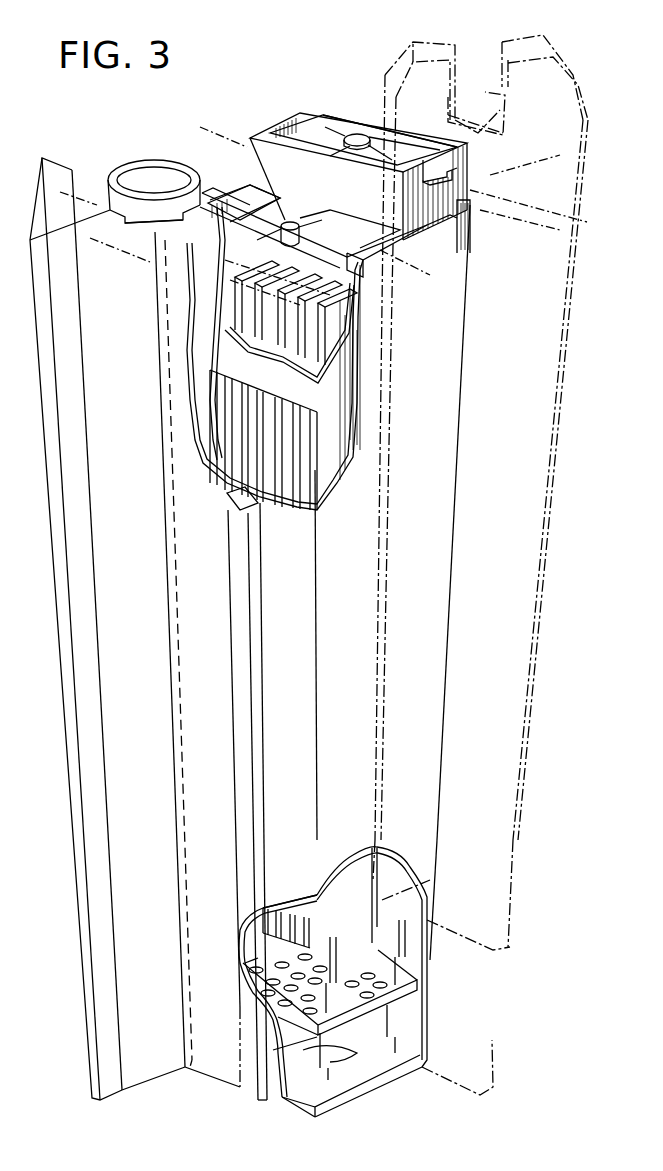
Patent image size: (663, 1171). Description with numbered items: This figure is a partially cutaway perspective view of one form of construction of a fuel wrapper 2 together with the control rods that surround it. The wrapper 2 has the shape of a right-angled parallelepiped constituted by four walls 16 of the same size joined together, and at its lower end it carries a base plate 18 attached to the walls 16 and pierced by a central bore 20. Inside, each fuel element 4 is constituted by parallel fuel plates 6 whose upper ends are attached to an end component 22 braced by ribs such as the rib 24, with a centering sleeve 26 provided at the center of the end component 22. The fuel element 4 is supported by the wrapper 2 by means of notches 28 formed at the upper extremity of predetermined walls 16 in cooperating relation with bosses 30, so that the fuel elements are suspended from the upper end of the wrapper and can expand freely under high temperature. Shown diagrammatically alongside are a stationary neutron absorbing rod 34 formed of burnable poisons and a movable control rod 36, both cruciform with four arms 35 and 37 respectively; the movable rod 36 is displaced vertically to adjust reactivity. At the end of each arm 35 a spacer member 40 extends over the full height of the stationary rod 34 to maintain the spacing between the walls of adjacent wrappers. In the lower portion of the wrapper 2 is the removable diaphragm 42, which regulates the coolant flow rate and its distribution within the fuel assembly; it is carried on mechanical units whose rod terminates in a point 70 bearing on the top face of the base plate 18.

The wrapper 2 is at (463, 285).
The fuel element 4 is at (270, 128).
The fuel plates 6 is at (247, 423).
The walls 16 is at (423, 860).
The base plate 18 is at (360, 1087).
The central bore 20 is at (277, 1070).
The end component 22 is at (345, 340).
The rib 24 is at (332, 245).
The centering sleeve 26 is at (285, 222).
The notches 28 is at (458, 232).
The bosses 30 is at (447, 167).
The stationary neutron absorbing rod 34 is at (181, 1072).
The arm 35 is at (125, 785).
The movable control rod 36 is at (480, 88).
The arm 37 is at (550, 366).
The spacer member 40 is at (246, 574).
The diaphragm 42 is at (412, 995).
The point 70 is at (403, 1050).